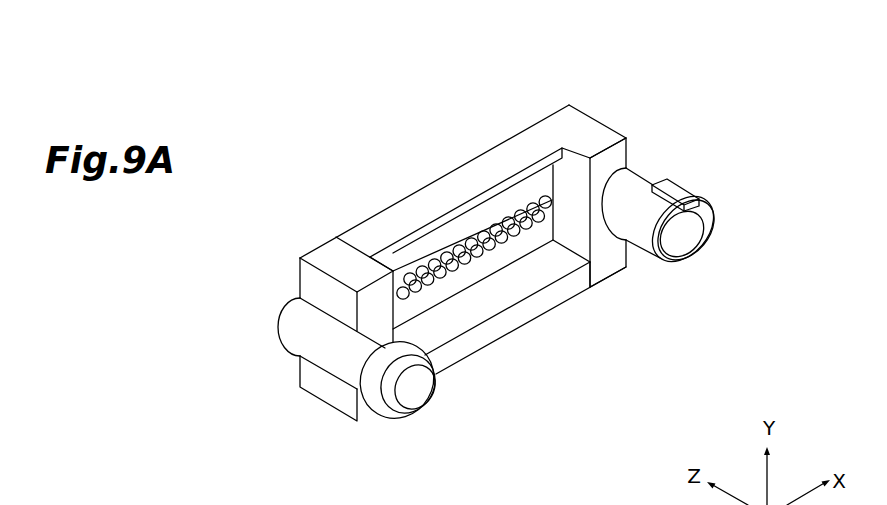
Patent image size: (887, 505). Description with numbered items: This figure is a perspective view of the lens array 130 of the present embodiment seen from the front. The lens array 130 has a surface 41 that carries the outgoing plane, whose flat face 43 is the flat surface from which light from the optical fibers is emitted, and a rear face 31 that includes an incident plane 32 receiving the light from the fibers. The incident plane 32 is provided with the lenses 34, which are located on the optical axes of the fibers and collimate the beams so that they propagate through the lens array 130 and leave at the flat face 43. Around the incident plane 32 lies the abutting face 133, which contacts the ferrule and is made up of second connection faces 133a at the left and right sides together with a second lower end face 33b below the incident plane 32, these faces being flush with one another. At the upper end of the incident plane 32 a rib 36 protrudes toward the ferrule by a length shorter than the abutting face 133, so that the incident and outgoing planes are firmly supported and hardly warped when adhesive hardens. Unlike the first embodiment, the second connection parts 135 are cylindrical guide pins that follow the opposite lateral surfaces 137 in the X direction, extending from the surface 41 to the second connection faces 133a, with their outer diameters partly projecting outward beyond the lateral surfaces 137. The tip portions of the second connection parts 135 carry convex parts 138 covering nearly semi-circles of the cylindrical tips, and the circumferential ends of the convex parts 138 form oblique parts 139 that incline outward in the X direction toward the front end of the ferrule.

The lens array 130 is at (424, 127).
The flat face 43 is at (380, 198).
The surface 41 is at (335, 226).
The lateral surfaces 137 is at (606, 127).
The rear face 31 is at (633, 153).
The incident plane 32 is at (536, 187).
The rib 36 is at (515, 175).
The lenses 34 is at (459, 246).
The second lower end face 33b is at (468, 341).
The abutting face 133 is at (661, 332).
The second connection faces 133a is at (594, 210).
The second connection parts 135 is at (690, 263).
The convex parts 138 is at (705, 192).
The oblique parts 139 is at (698, 193).